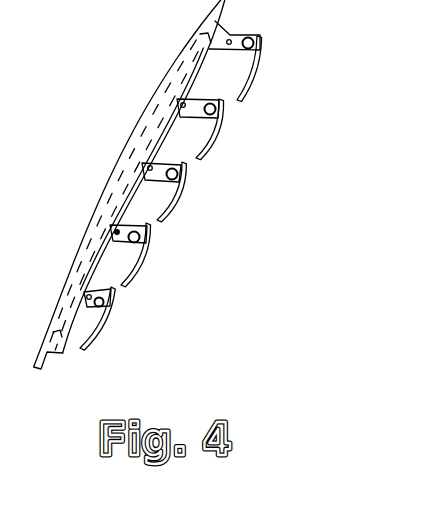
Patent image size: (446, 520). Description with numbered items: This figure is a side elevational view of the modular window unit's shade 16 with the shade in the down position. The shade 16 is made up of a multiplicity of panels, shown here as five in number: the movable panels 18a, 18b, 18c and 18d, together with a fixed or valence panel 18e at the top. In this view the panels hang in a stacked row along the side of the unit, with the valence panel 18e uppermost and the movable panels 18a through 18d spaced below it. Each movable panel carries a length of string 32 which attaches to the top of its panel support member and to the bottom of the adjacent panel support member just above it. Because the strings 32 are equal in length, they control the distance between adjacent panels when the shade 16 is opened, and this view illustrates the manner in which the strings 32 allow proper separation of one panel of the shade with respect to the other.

The shade 16 is at (194, 184).
The panel 18a is at (97, 329).
The panel 18b is at (136, 269).
The panel 18c is at (171, 209).
The panel 18d is at (212, 145).
The fixed or valence panel 18e is at (251, 84).
The string 32 is at (149, 106).